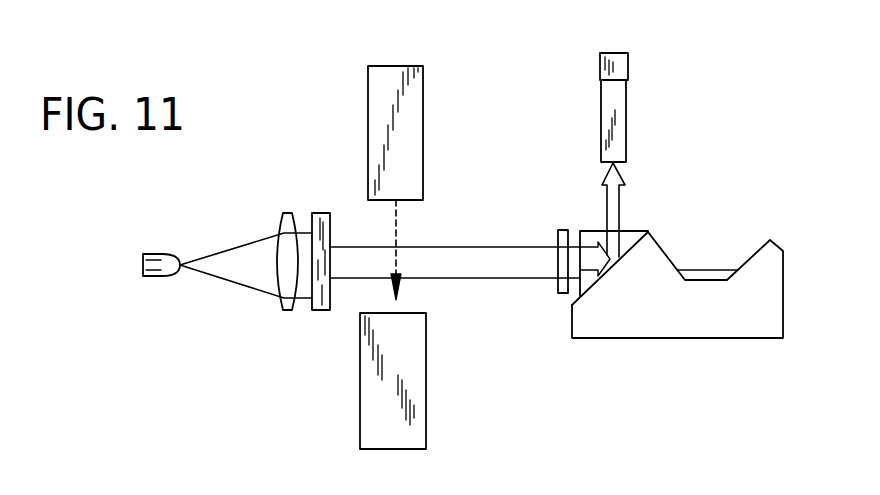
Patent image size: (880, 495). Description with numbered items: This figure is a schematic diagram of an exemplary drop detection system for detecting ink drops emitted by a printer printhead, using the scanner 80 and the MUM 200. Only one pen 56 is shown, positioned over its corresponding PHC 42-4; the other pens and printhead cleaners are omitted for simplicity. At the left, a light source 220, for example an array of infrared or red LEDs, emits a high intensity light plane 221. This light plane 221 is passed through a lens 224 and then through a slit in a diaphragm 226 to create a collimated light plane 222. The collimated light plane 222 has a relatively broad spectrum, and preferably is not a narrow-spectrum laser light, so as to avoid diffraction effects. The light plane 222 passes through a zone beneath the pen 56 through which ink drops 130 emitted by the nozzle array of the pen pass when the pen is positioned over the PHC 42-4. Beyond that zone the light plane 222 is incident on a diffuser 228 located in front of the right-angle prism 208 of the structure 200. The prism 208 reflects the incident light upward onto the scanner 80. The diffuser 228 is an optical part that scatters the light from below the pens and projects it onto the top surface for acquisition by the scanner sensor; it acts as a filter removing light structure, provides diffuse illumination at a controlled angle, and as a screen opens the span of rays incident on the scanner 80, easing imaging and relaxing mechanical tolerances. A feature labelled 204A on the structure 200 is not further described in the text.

The pen 56 is at (383, 78).
The diaphragm 226 is at (322, 213).
The lens 224 is at (288, 213).
The light source 220 is at (157, 277).
The high intensity light plane 221 is at (237, 284).
The ink drops 130 is at (408, 235).
The collimated light plane 222 is at (452, 278).
The diffuser 228 is at (565, 230).
The scanner 80 is at (600, 93).
The prism 204A is at (637, 238).
The MUM 200 is at (660, 248).
The right-angle prism 208 is at (582, 296).
The PHC 42-4 is at (373, 393).